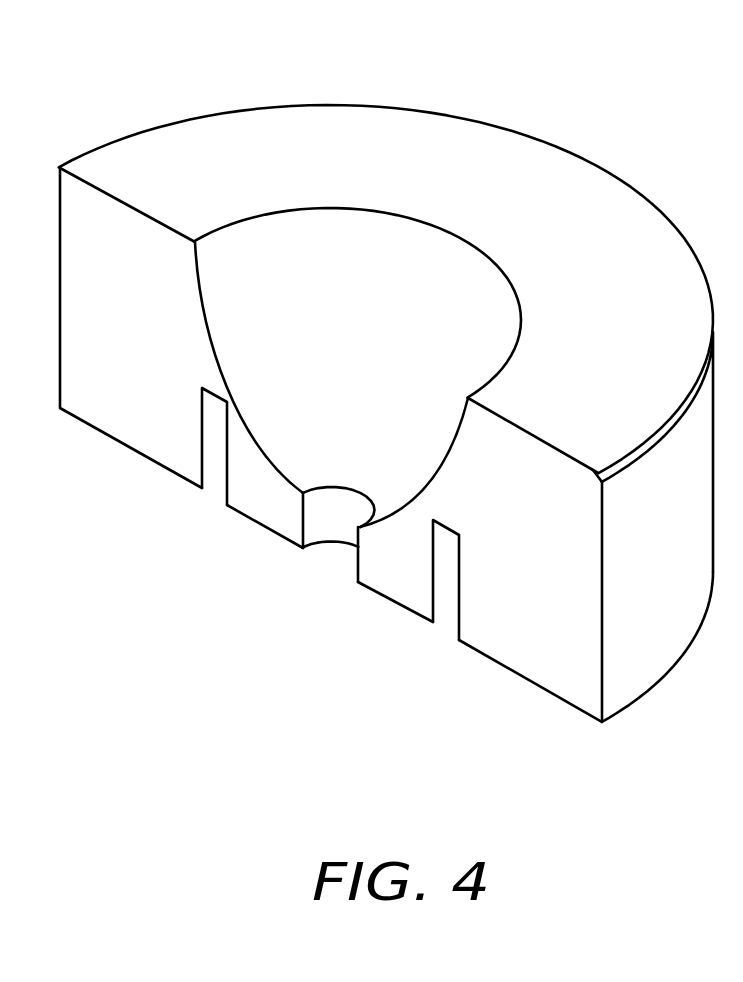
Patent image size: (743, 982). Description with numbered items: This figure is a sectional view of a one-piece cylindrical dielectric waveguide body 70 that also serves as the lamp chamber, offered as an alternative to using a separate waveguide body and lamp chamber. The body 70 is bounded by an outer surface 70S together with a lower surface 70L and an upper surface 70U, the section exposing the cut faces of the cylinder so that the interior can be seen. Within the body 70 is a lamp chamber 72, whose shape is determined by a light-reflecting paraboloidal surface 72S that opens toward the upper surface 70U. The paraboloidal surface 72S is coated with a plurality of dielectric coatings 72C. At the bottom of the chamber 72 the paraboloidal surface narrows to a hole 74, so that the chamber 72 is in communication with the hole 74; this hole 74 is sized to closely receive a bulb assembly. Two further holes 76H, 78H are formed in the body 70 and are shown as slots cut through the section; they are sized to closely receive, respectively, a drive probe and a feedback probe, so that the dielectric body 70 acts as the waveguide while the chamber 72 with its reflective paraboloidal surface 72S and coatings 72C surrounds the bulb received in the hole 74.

The cylindrical dielectric waveguide body 70 is at (415, 72).
The upper surface 70U is at (632, 372).
The outer surface 70S is at (687, 558).
The lower surface 70L is at (578, 690).
The lamp chamber 72 is at (372, 304).
The paraboloidal surface 72S is at (307, 379).
The dielectric coatings 72C is at (430, 377).
The hole 74 is at (336, 497).
The hole 76H is at (218, 483).
The hole 78H is at (450, 615).